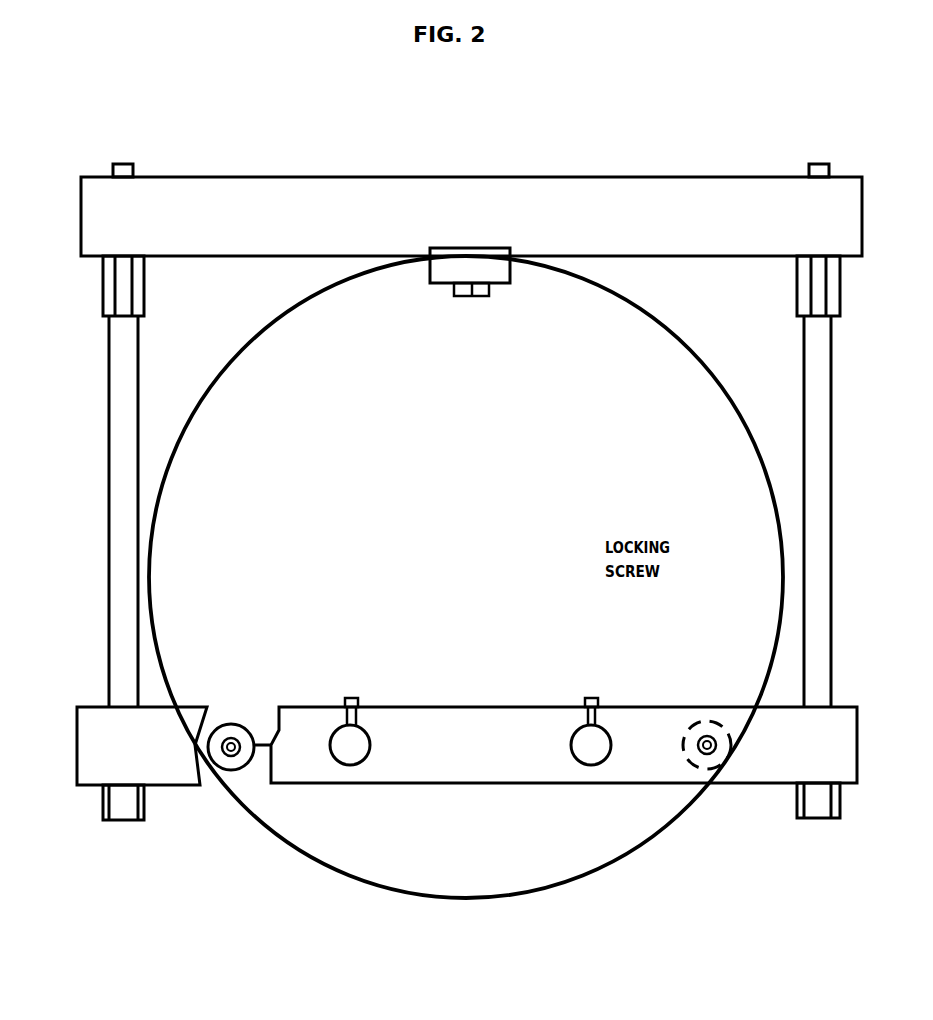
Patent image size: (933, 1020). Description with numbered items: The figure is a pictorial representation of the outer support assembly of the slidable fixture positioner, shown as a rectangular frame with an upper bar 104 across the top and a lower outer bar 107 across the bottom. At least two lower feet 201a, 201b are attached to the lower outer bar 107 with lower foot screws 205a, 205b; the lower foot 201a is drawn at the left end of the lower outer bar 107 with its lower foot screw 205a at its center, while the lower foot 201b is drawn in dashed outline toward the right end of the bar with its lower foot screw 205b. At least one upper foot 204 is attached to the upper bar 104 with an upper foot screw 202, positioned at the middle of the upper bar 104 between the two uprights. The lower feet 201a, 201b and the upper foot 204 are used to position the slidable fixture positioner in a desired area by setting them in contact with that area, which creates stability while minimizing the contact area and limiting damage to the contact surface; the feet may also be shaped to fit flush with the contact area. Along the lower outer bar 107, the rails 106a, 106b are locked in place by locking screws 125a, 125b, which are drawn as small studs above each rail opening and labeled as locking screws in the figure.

The upper bar 104 is at (767, 255).
The upper foot 204 is at (428, 260).
The upper foot screw 202 is at (470, 295).
The lower outer bar 107 is at (520, 790).
The lower foot 201a is at (247, 718).
The lower foot 201b is at (737, 722).
The lower foot screw 205a is at (215, 763).
The lower foot screw 205b is at (712, 752).
The rail 106a is at (338, 762).
The rail 106b is at (604, 762).
The locking screw 125a is at (352, 697).
The locking screw 125b is at (597, 700).